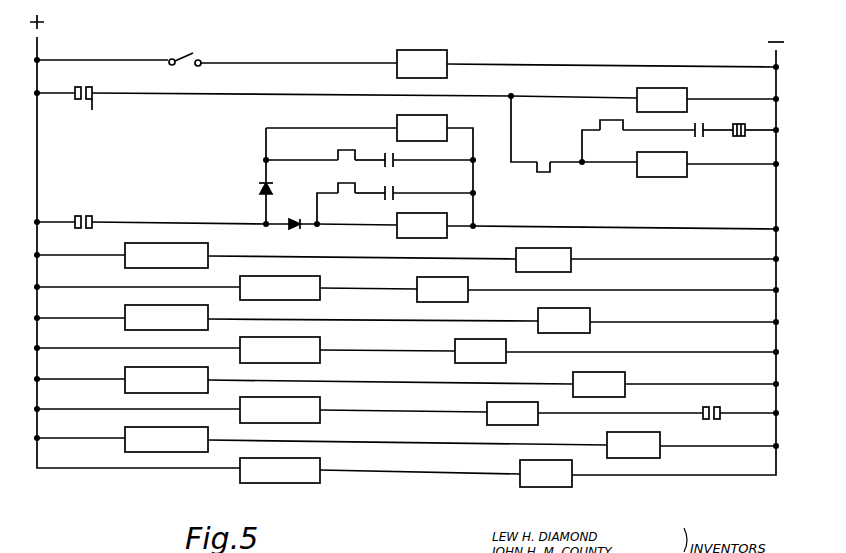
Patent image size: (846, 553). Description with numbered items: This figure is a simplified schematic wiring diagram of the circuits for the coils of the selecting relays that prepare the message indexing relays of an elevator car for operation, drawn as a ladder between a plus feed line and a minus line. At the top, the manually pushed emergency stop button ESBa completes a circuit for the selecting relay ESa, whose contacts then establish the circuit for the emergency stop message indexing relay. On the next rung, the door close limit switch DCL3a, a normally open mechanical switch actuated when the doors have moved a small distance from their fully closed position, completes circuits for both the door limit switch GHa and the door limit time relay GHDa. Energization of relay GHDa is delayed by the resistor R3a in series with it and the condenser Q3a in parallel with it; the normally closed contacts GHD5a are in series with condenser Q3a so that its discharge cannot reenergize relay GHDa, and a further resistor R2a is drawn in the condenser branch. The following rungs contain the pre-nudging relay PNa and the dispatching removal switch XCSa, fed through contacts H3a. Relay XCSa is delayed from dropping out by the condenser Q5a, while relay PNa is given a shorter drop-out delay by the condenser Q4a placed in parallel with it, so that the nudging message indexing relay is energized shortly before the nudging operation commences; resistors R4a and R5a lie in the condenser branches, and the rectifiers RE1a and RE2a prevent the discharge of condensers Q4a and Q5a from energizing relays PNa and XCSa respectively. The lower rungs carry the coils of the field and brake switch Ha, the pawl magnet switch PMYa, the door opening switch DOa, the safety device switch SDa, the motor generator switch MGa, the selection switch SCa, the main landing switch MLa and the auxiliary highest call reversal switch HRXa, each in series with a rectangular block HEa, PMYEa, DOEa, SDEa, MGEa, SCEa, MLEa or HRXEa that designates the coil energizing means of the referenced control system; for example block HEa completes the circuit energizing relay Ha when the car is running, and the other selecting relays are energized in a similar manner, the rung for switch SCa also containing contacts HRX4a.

The emergency stop button ESBa is at (204, 50).
The door close limit switch DCL3a is at (85, 85).
The emergency stop selecting relay ESa is at (422, 64).
The door limit switch GHa is at (662, 100).
The door limit time relay GHDa is at (662, 164).
The resistor R3a is at (540, 156).
The resistor R2a is at (609, 117).
The condenser Q3a is at (700, 122).
The normally closed contacts GHD5a is at (741, 122).
The pre-nudging relay PNa is at (422, 128).
The resistor R4a is at (342, 147).
The condenser Q4a is at (385, 151).
The resistor R5a is at (342, 181).
The condenser Q5a is at (385, 184).
The rectifier RE1a is at (247, 186).
The rectifier RE2a is at (291, 215).
The dispatching removal switch XCSa is at (422, 225).
The hold contact H3a is at (89, 206).
The coil energizing means block PMYEa is at (166, 255).
The pawl magnet switch PMYa is at (543, 260).
The coil energizing means block HEa is at (280, 288).
The field and brake switch Ha is at (442, 289).
The coil energizing means block DOEa is at (166, 317).
The door opening switch DOa is at (564, 320).
The coil energizing means block SDEa is at (280, 350).
The safety device switch SDa is at (480, 351).
The coil energizing means block MGEa is at (166, 380).
The motor generator switch MGa is at (599, 384).
The coil energizing means block SCEa is at (280, 410).
The selection switch SCa is at (512, 413).
The relay contact HRX4a is at (716, 399).
The coil energizing means block MLEa is at (166, 439).
The main landing switch MLa is at (633, 445).
The coil energizing means block HRXEa is at (280, 470).
The auxiliary highest call reversal switch HRXa is at (546, 473).